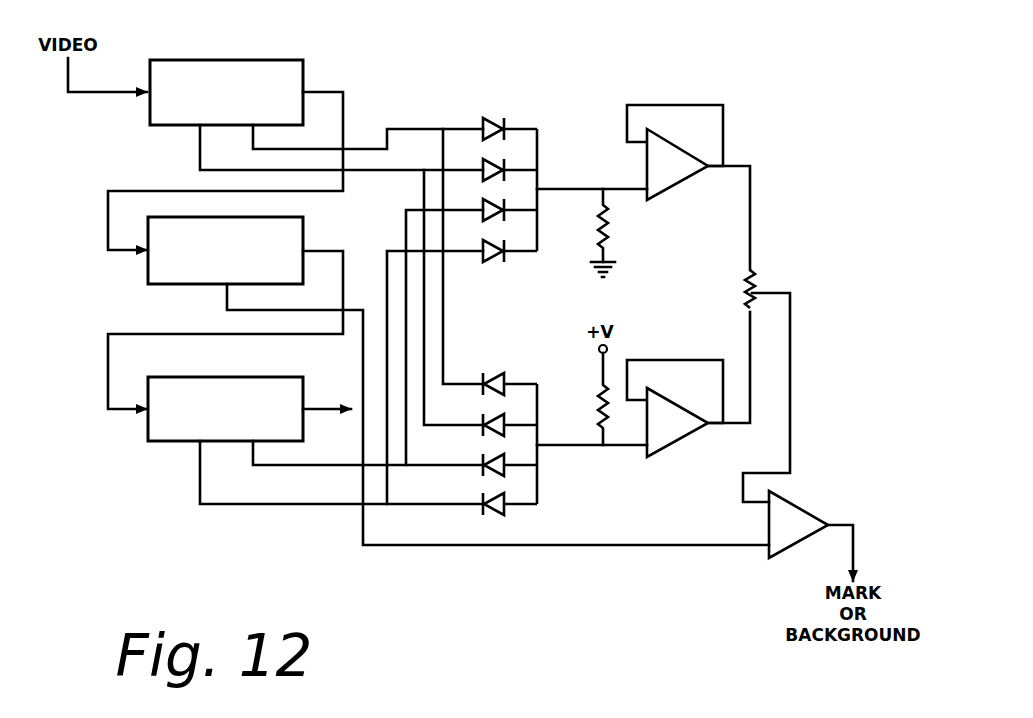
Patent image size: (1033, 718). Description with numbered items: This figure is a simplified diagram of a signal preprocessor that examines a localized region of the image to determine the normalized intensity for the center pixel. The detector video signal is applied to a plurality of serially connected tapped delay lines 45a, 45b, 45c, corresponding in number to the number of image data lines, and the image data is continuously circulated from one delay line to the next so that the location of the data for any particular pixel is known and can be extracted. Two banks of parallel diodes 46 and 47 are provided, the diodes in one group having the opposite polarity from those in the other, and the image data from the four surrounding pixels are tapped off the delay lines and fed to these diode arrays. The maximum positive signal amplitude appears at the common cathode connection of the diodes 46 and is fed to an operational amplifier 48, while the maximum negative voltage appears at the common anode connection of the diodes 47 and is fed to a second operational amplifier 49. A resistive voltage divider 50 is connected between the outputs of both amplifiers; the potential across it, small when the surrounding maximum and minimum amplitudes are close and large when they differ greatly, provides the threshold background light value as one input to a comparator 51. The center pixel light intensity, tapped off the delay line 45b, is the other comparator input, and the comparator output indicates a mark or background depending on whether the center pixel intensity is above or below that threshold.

The tapped delay line 45a is at (290, 58).
The tapped delay line 45b is at (283, 219).
The tapped delay line 45c is at (280, 378).
The diodes 46 is at (494, 113).
The diodes 47 is at (503, 372).
The operational amplifier 48 is at (675, 180).
The second operational amplifier 49 is at (663, 448).
The resistive voltage divider 50 is at (753, 283).
The comparator 51 is at (800, 512).